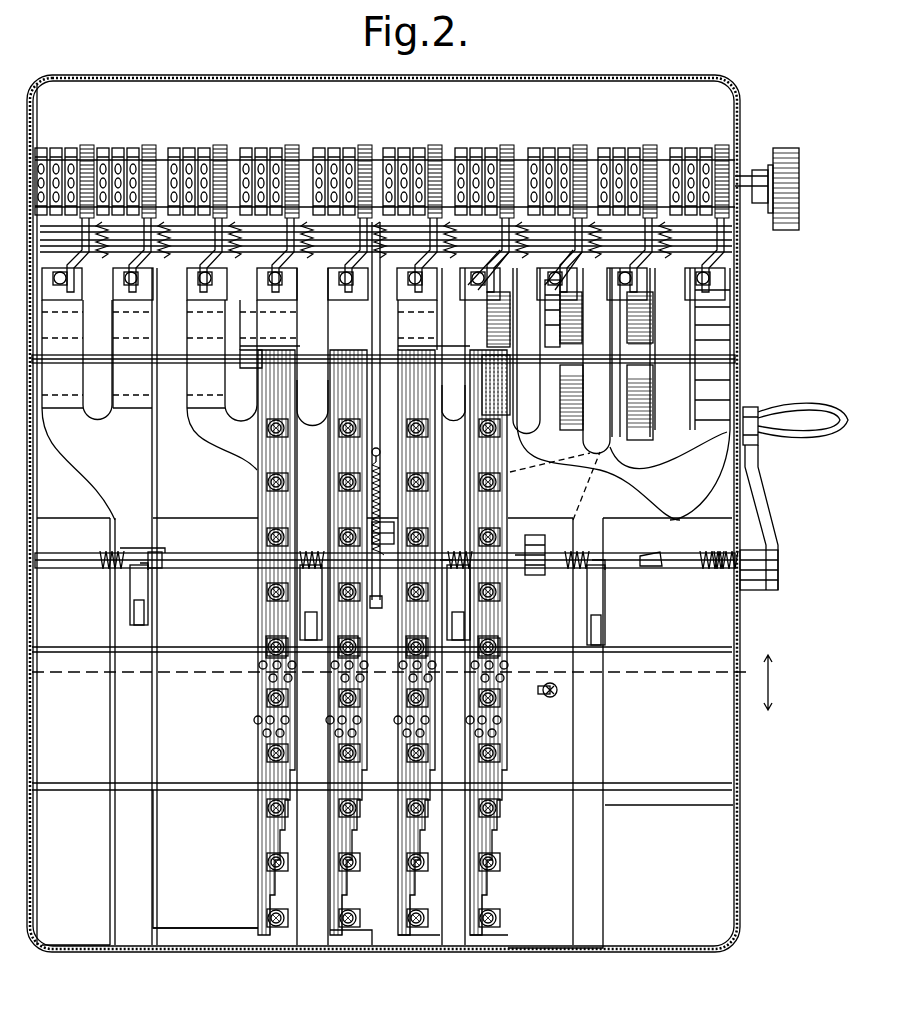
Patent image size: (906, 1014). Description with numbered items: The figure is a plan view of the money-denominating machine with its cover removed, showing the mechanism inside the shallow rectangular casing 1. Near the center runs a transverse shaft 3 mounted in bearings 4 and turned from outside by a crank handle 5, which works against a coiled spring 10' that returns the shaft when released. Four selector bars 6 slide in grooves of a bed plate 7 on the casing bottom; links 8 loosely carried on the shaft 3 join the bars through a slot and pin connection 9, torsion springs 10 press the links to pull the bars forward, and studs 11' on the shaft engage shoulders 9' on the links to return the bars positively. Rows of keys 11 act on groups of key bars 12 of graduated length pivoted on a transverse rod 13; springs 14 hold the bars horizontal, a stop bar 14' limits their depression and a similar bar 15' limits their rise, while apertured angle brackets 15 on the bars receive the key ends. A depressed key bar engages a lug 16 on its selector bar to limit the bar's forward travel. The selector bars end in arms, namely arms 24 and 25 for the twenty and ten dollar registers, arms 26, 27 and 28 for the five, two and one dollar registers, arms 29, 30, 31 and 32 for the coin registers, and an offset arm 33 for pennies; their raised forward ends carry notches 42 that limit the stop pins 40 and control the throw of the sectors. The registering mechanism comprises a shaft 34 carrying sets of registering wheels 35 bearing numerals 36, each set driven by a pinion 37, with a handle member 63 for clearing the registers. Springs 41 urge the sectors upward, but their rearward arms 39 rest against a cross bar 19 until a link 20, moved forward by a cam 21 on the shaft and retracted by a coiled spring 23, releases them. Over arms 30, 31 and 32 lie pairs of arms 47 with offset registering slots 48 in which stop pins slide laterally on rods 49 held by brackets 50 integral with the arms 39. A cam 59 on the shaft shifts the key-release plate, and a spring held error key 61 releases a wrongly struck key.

The casing 1 is at (736, 782).
The transverse shaft 3 is at (675, 572).
The bearings 4 is at (42, 555).
The crank handle 5 is at (765, 520).
The selector bars 6 is at (150, 880).
The bed plate 7 is at (700, 808).
The links 8 is at (150, 598).
The slot and pin connection 9 is at (422, 626).
The shoulders 9' is at (154, 546).
The torsion springs 10 is at (375, 543).
The coiled spring 10' is at (715, 550).
The keys 11 is at (406, 735).
The studs 11' is at (392, 546).
The key bars 12 is at (262, 774).
The transverse rod 13 is at (730, 360).
The springs 14 is at (391, 699).
The stop bar 14' is at (382, 643).
The apertured angle brackets 15 is at (370, 642).
The stop bar 15' is at (384, 653).
The lug 16 is at (215, 908).
The cross bar 19 is at (182, 248).
The link 20 is at (395, 395).
The cam 21 is at (400, 530).
The coiled spring 23 is at (390, 480).
The arm 24 is at (75, 388).
The arm 25 is at (142, 388).
The arm 26 is at (220, 382).
The arm 27 is at (290, 324).
The arm 28 is at (382, 336).
The arm 29 is at (425, 343).
The arm 30 is at (470, 316).
The arm 31 is at (575, 392).
The arm 32 is at (645, 392).
The offset arm 33 is at (725, 338).
The shaft 34 is at (748, 176).
The registering wheels 35 is at (185, 150).
The numerals 36 is at (325, 152).
The driven pinion 37 is at (88, 150).
The arms 39 is at (85, 258).
The stop pins 40 is at (140, 285).
The springs 41 is at (340, 255).
The notches 42 is at (290, 342).
The arms 47 is at (505, 340).
The registering slots 48 is at (470, 330).
The rods 49 is at (505, 310).
The brackets 50 is at (470, 258).
The cam 59 is at (535, 534).
The error key 61 is at (550, 698).
The handle member 63 is at (798, 208).